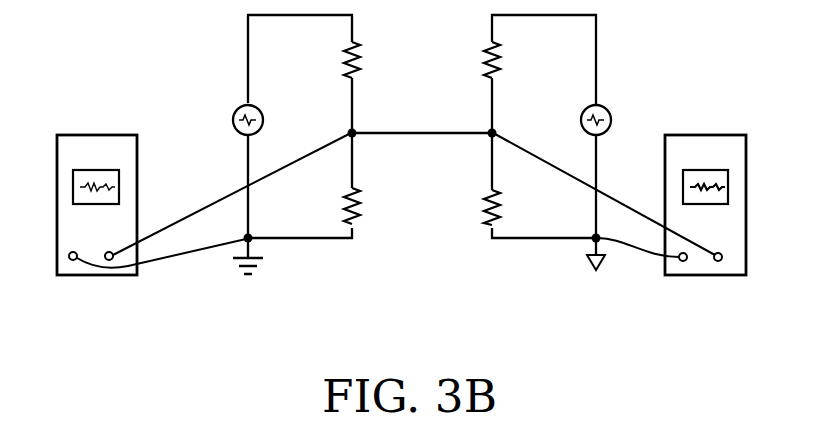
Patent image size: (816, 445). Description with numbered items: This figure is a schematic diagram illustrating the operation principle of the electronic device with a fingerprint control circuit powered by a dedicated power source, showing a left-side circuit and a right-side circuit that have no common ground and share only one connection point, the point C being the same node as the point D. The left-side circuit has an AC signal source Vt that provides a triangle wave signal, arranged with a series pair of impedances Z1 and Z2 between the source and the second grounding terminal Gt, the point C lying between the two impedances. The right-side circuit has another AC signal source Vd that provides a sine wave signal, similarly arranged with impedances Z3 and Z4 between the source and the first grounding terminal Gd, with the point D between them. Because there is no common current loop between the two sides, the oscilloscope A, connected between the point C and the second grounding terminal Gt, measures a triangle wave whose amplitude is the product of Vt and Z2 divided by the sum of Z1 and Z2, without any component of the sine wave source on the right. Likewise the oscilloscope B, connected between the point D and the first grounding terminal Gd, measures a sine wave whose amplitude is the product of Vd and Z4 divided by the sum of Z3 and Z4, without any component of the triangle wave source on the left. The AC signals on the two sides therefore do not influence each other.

The impedance Z1 is at (368, 63).
The impedance Z2 is at (371, 209).
The impedance Z3 is at (473, 58).
The impedance Z4 is at (473, 211).
The AC signal source Vt is at (227, 121).
The AC signal source Vd is at (614, 125).
The point C is at (343, 116).
The point D is at (503, 117).
The second grounding terminal Gt is at (250, 275).
The first grounding terminal Gd is at (605, 271).
The oscilloscope A is at (197, 233).
The oscilloscope B is at (620, 235).